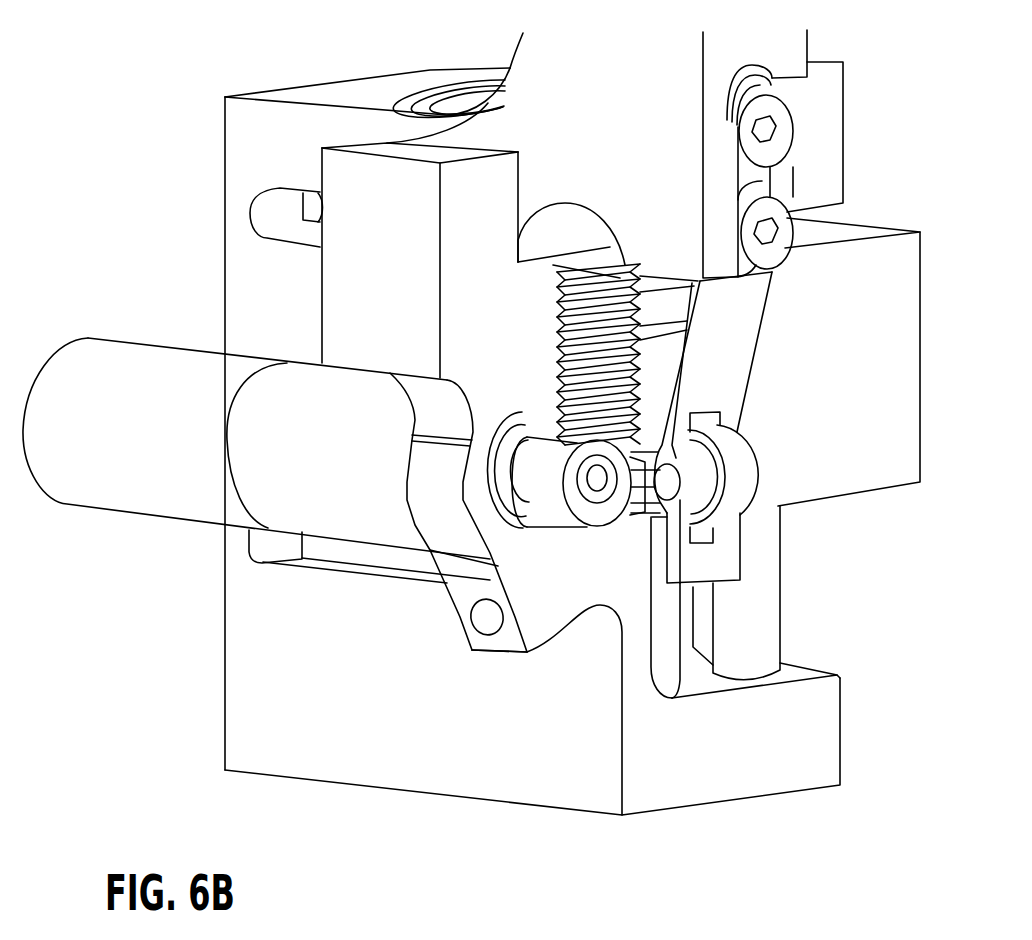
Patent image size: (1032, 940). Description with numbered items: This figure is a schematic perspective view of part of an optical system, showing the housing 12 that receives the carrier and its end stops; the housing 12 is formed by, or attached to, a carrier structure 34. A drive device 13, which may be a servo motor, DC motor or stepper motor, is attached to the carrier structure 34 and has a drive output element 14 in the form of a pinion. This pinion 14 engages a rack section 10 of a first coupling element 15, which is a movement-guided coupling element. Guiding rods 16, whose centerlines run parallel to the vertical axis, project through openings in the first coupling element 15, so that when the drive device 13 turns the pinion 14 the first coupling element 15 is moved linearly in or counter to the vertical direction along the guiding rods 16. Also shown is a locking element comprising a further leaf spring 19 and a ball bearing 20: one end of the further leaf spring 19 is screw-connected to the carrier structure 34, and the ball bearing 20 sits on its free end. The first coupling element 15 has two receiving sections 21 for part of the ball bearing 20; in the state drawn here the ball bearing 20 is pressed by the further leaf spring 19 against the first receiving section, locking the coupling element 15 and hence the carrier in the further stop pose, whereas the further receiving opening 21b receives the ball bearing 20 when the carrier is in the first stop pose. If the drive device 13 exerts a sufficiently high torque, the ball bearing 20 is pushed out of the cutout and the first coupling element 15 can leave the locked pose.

The rack section 10 is at (557, 328).
The housing 12 is at (278, 140).
The drive device 13 is at (172, 495).
The drive output element 14 is at (558, 493).
The first coupling element 15 is at (863, 268).
The guiding rods 16 is at (663, 607).
The further leaf spring 19 is at (715, 363).
The ball bearing 20 is at (740, 490).
The receiving sections 21 is at (785, 153).
The further receiving opening 21b is at (657, 307).
The carrier structure 34 is at (240, 697).